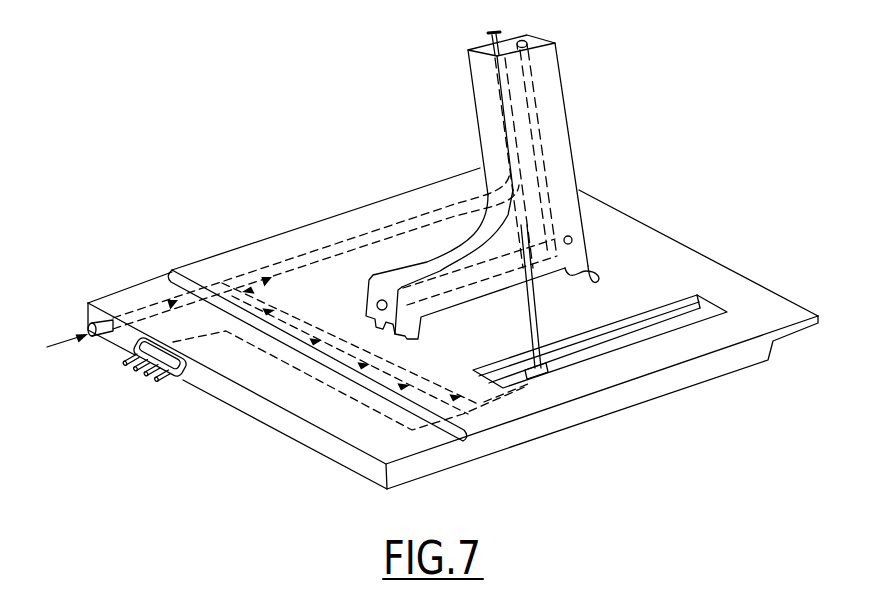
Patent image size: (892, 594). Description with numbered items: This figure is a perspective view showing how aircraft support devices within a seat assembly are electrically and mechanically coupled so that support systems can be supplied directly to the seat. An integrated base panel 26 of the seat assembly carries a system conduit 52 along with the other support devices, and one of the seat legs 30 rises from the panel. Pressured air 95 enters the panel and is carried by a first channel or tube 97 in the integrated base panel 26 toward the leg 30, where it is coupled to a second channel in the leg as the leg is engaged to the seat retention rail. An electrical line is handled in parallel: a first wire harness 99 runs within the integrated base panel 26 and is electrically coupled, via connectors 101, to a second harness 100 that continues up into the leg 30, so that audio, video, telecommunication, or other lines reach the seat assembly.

The integrated base panel 26 is at (631, 215).
The legs 30 is at (568, 126).
The system conduit 52 is at (278, 298).
The pressured air 95 is at (55, 343).
The first channel or tube 97 is at (311, 325).
The first wire harness 99 is at (300, 391).
The second harness 100 is at (503, 187).
The connectors 101 is at (551, 362).